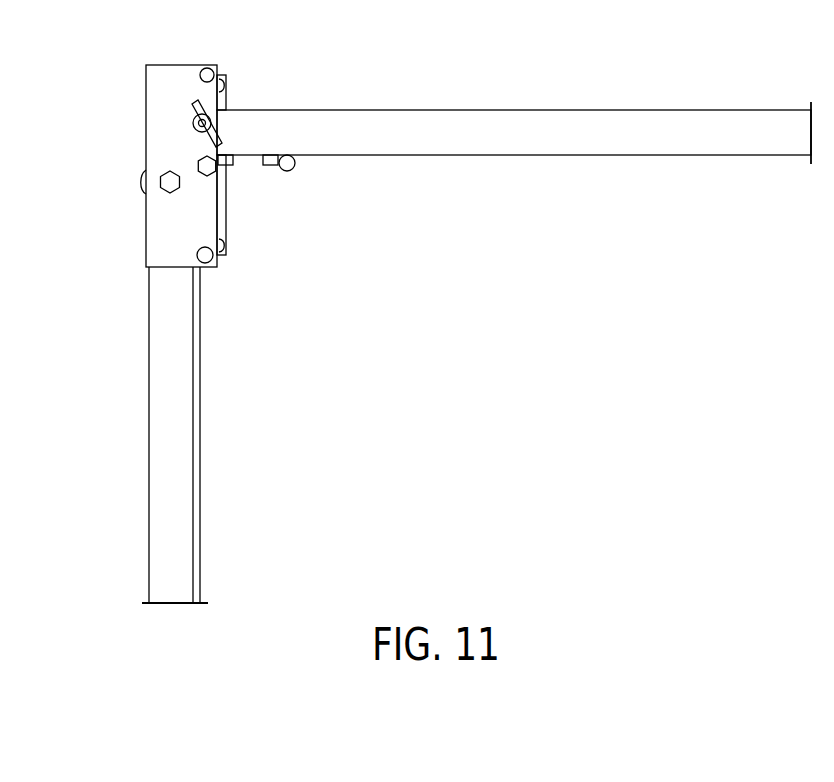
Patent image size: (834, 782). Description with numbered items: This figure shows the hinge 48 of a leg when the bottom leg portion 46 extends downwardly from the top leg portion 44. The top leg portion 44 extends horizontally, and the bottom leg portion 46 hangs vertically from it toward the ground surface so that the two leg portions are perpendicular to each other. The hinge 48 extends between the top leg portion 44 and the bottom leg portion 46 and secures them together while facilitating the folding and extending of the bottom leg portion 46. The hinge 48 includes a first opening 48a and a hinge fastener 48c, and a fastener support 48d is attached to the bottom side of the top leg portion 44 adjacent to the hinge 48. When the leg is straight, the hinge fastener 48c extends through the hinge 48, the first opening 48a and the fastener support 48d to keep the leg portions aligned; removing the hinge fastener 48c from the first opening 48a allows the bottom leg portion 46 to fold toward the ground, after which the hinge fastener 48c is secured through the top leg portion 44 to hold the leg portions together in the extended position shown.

The top leg portion 44 is at (673, 137).
The bottom leg portion 46 is at (168, 472).
The hinge 48 is at (146, 72).
The first opening 48a is at (204, 67).
The hinge fastener 48c is at (193, 123).
The fastener support 48d is at (290, 171).